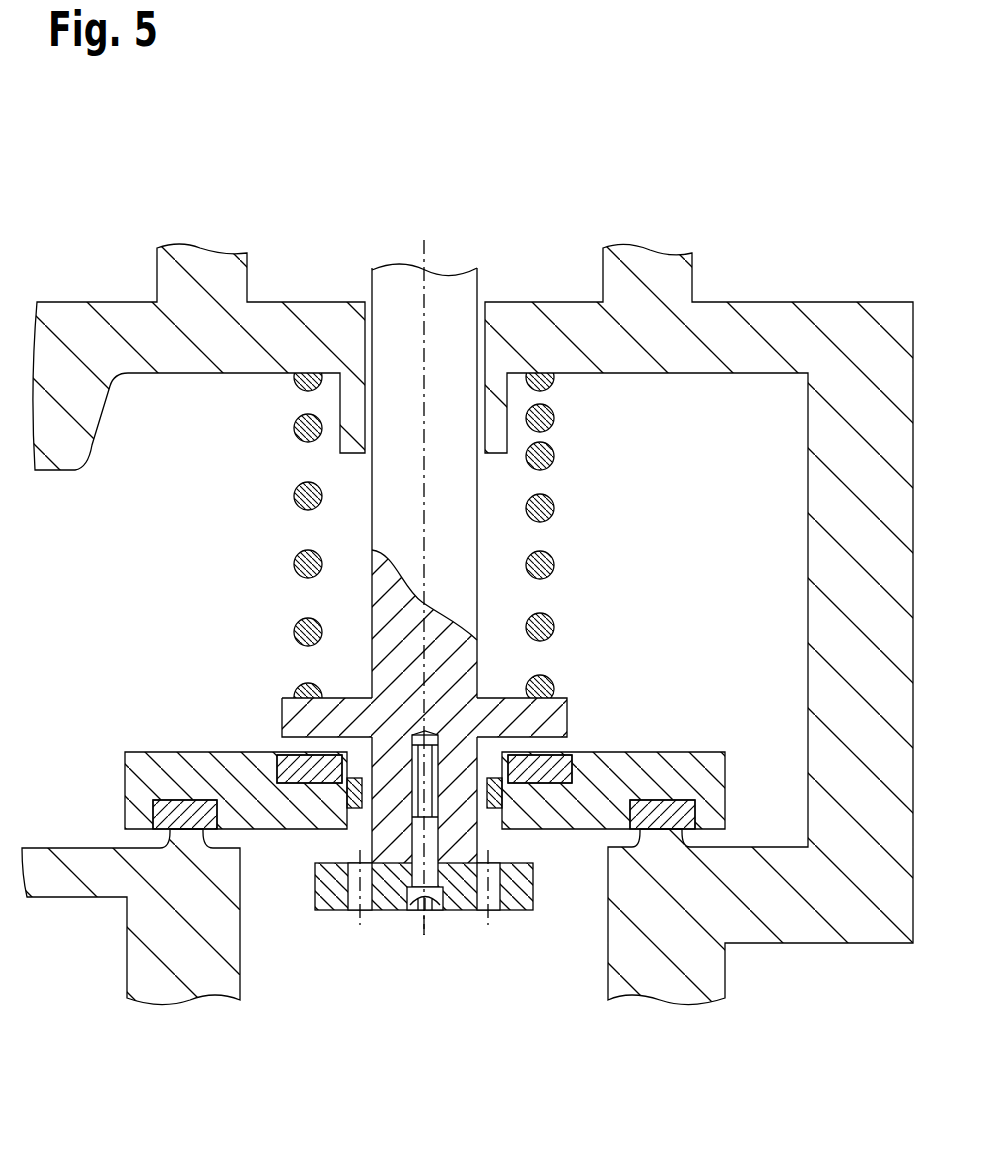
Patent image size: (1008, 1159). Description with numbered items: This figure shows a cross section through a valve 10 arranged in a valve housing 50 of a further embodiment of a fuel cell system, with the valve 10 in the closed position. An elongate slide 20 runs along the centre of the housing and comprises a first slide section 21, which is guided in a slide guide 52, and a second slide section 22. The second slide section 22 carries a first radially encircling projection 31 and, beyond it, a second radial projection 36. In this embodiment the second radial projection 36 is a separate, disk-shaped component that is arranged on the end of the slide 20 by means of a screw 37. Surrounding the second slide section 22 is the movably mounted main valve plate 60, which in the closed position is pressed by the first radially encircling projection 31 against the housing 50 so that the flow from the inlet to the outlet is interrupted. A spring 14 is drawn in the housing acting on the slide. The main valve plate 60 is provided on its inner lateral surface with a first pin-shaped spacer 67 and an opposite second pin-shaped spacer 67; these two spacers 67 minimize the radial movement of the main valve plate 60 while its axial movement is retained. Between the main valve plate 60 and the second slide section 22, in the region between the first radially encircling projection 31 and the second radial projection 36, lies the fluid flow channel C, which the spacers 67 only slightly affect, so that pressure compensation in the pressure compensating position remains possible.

The valve 10 is at (145, 580).
The spring 14 is at (555, 459).
The slide 20 is at (215, 500).
The first slide section 21 is at (477, 533).
The second slide section 22 is at (285, 692).
The first radially encircling projection 31 is at (568, 719).
The second radial projection 36 is at (533, 888).
The screw 37 is at (426, 912).
The valve housing 50 is at (120, 302).
The slide guide 52 is at (385, 365).
The main valve plate 60 is at (125, 788).
The pin-shaped spacer 67 is at (355, 795).
The fluid flow channel C is at (483, 763).